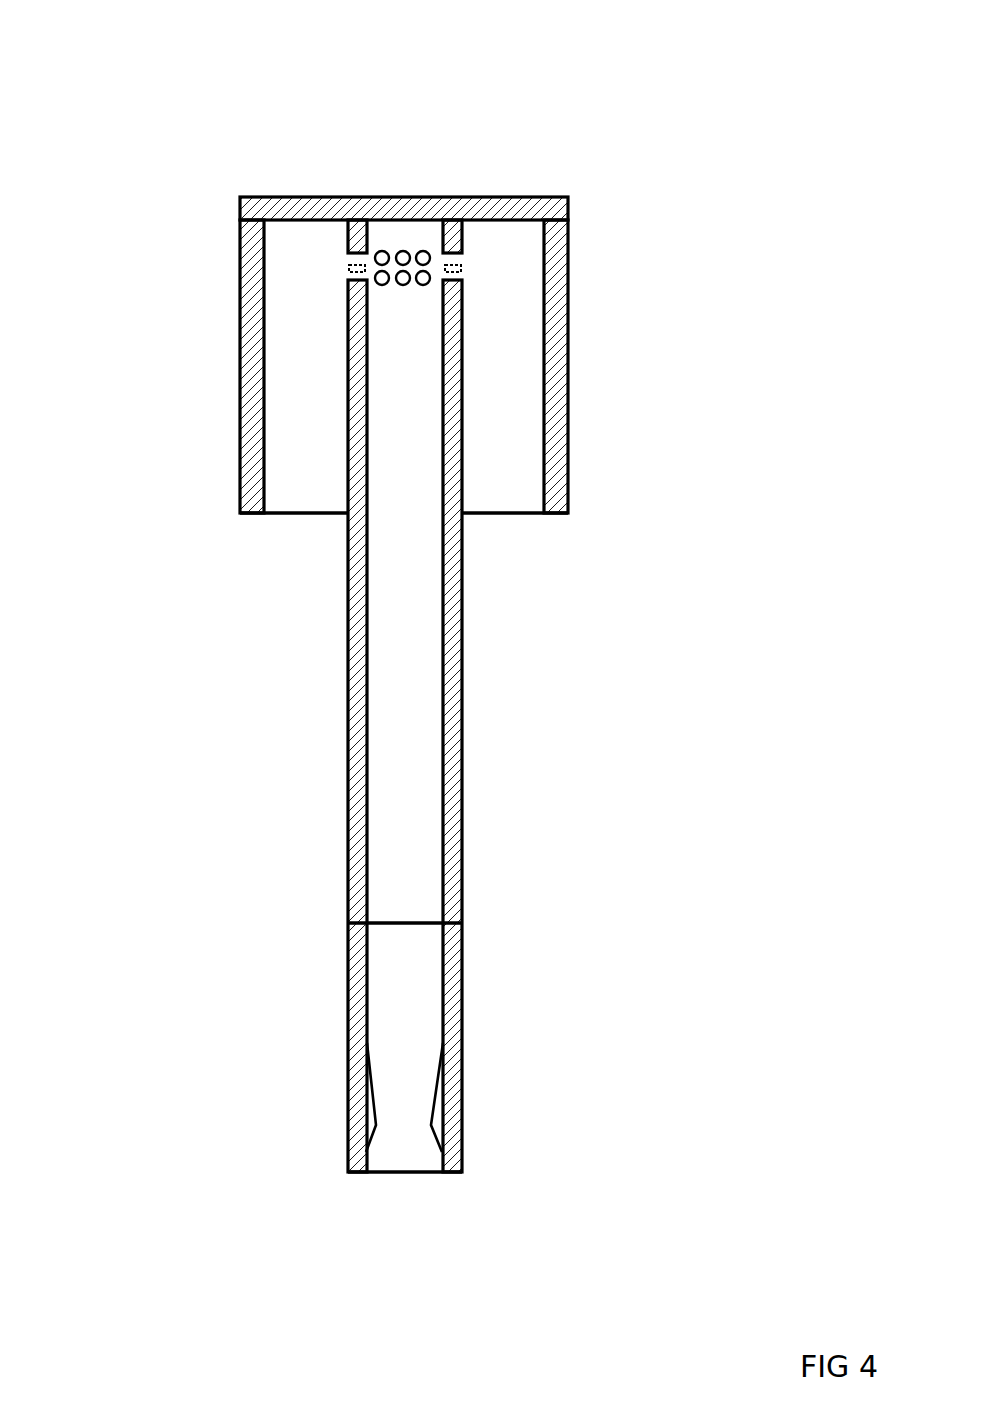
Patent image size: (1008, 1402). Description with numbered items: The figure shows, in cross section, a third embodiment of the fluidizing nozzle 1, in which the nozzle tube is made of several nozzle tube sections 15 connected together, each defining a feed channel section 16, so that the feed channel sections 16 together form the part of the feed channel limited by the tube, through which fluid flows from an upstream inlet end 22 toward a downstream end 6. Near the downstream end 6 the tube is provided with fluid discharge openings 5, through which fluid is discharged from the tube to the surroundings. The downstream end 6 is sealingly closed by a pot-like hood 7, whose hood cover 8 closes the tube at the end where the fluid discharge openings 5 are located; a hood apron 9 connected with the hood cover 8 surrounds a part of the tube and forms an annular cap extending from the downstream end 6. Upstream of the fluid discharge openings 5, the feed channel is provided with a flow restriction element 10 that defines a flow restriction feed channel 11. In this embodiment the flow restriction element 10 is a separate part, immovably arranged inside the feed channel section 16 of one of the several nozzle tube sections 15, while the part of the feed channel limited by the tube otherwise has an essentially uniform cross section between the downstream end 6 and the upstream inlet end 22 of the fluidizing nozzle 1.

The fluidizing nozzle 1 is at (184, 162).
The fluid discharge opening 5 is at (453, 257).
The downstream end 6 is at (498, 242).
The pot-like hood 7 is at (170, 339).
The hood cover 8 is at (322, 208).
The hood apron 9 is at (253, 413).
The flow restriction element 10 is at (498, 1099).
The flow restriction feed channel 11 is at (398, 1105).
The nozzle tube section 15 is at (501, 970).
The feed channel section 16 is at (402, 1010).
The upstream inlet end 22 is at (428, 1202).